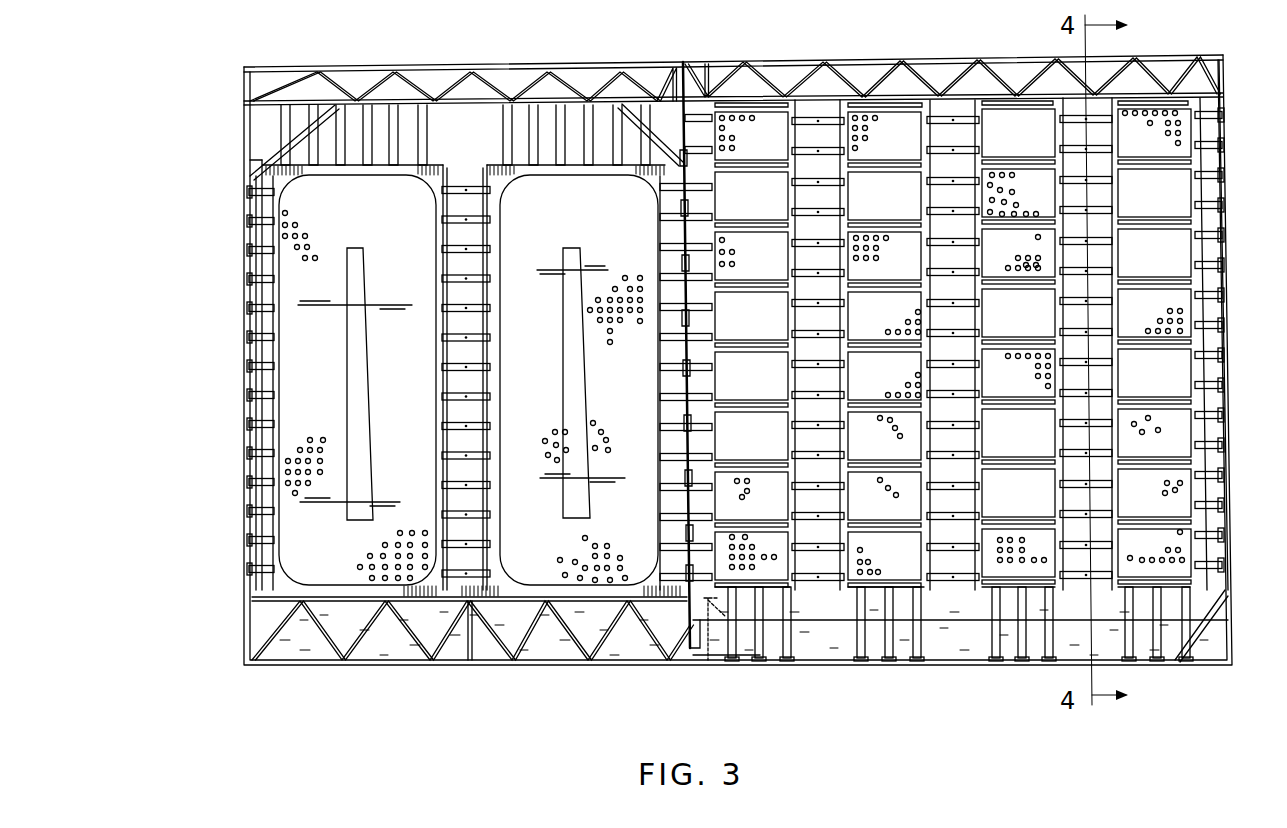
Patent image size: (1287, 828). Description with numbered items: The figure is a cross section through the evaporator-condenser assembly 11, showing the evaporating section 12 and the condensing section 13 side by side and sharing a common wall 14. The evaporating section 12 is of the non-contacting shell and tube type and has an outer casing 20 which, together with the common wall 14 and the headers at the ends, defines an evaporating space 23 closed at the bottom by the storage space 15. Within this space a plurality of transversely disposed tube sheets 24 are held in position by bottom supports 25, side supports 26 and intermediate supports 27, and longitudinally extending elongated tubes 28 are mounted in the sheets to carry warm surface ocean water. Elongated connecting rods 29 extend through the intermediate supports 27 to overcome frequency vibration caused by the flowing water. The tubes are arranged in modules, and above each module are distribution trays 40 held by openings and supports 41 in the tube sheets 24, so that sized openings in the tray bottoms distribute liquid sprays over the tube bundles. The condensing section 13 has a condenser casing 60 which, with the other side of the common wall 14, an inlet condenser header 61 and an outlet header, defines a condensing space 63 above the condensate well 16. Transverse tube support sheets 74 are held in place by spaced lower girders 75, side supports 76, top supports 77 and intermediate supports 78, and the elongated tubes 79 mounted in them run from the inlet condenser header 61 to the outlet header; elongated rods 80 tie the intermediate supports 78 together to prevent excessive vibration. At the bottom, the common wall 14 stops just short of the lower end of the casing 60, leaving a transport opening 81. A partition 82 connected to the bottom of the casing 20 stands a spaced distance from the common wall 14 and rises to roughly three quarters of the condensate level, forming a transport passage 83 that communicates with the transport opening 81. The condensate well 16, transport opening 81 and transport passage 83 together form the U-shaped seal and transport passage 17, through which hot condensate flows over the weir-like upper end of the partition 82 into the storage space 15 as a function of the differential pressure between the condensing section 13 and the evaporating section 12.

The evaporator-condenser assembly 11 is at (232, 158).
The evaporating section 12 is at (1234, 322).
The condensing section 13 is at (246, 282).
The common wall 14 is at (697, 347).
The storage space 15 is at (972, 612).
The condensate well 16 is at (522, 631).
The U-shaped seal and transport passage 17 is at (683, 575).
The outer casing 20 is at (1228, 197).
The evaporating space 23 is at (836, 478).
The tube sheets 24 is at (1226, 405).
The bottom supports 25 is at (796, 604).
The side supports 26 is at (663, 235).
The intermediate supports 27 is at (962, 305).
The elongated tubes 28 is at (1015, 172).
The connecting rods 29 is at (822, 275).
The distribution trays 40 is at (740, 172).
The openings and supports 41 is at (755, 158).
The condenser casing 60 is at (250, 598).
The inlet condenser header 61 is at (272, 568).
The condensing space 63 is at (478, 147).
The tube support sheets 74 is at (440, 297).
The lower girders 75 is at (410, 597).
The side supports 76 is at (262, 423).
The top supports 77 is at (347, 162).
The intermediate supports 78 is at (477, 243).
The elongated tubes 79 is at (618, 285).
The elongated rods 80 is at (467, 222).
The transport opening 81 is at (686, 652).
The partition 82 is at (712, 640).
The transport passage 83 is at (702, 632).